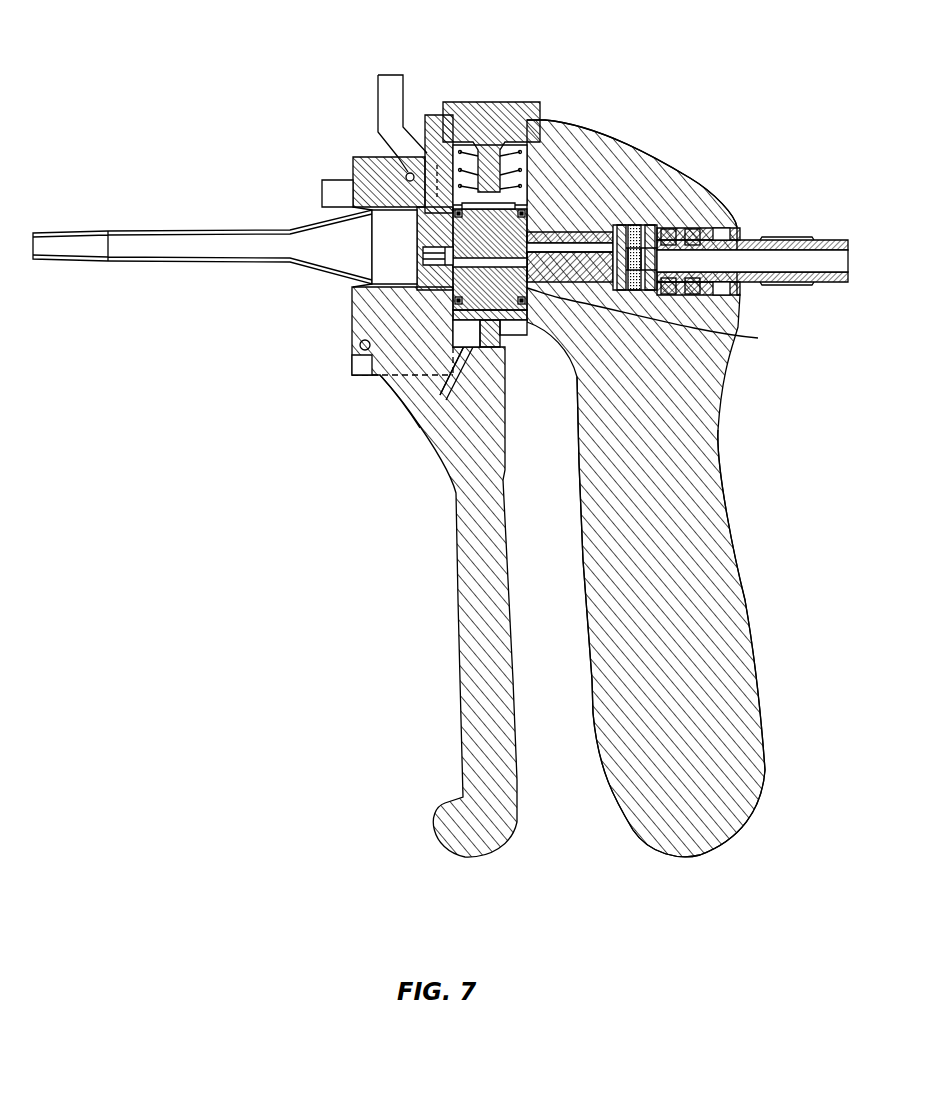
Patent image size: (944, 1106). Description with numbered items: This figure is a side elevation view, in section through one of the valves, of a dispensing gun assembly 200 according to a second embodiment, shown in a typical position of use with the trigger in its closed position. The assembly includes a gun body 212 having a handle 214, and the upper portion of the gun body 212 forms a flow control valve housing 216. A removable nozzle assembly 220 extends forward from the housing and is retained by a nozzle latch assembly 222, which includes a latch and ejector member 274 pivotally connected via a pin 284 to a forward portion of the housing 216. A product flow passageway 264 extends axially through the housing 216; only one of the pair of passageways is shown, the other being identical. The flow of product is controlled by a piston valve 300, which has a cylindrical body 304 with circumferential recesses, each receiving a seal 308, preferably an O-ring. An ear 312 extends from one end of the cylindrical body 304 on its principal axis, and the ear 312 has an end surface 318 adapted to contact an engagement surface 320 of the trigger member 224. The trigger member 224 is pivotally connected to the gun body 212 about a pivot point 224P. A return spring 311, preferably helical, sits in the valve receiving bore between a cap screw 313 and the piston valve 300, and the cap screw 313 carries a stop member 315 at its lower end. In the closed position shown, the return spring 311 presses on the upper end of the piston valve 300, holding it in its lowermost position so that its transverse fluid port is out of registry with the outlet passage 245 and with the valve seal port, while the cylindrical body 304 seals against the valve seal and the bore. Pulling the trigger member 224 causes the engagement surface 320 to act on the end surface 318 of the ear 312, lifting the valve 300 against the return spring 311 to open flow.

The dispensing gun assembly 200 is at (228, 583).
The gun body 212 is at (677, 410).
The handle 214 is at (690, 632).
The flow control valve housing 216 is at (655, 163).
The removable nozzle assembly 220 is at (152, 224).
The nozzle latch assembly 222 is at (360, 143).
The trigger member 224 is at (480, 622).
The pivot point 224P is at (358, 346).
The outlet passage 245 is at (376, 182).
The product flow passageway 264 is at (724, 228).
The latch and ejector member 274 is at (378, 102).
The pin 284 is at (395, 158).
The first piston valve 300 is at (455, 300).
The cylindrical body 304 is at (667, 320).
The seal 308 is at (458, 306).
The return spring 311 is at (495, 206).
The ear 312 is at (496, 342).
The cap screw 313 is at (502, 102).
The stop member 315 is at (470, 188).
The end surface 318 is at (430, 416).
The engagement surface 320 is at (403, 382).